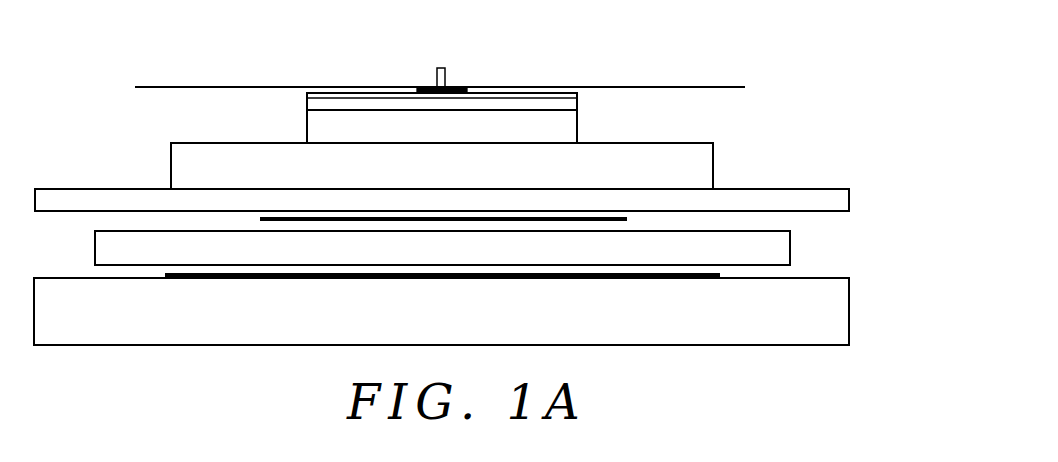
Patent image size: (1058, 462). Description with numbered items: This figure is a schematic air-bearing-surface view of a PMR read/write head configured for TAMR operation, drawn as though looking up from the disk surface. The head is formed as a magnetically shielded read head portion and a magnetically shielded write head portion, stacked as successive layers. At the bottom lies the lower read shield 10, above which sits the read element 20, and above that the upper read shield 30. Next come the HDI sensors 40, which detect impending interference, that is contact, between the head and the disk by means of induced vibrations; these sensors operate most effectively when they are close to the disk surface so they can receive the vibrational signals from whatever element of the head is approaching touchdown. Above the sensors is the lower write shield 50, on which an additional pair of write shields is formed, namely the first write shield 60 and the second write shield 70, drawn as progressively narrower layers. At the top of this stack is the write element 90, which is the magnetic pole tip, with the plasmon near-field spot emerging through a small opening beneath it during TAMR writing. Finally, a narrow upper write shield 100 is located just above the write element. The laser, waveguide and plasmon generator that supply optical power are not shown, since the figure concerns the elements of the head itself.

The lower read shield 10 is at (833, 315).
The read element 20 is at (720, 274).
The upper read shield 30 is at (780, 248).
The HDI sensors 40 is at (627, 219).
The lower write shield 50 is at (837, 201).
The first write shield 60 is at (698, 168).
The second write shield 70 is at (563, 124).
The write element 90 is at (435, 88).
The upper write shield 100 is at (443, 75).